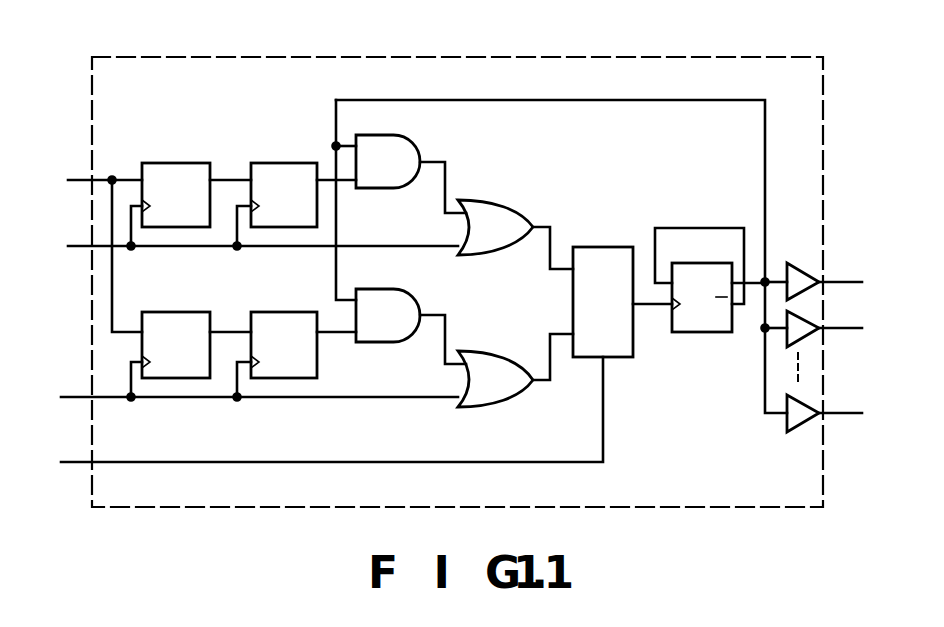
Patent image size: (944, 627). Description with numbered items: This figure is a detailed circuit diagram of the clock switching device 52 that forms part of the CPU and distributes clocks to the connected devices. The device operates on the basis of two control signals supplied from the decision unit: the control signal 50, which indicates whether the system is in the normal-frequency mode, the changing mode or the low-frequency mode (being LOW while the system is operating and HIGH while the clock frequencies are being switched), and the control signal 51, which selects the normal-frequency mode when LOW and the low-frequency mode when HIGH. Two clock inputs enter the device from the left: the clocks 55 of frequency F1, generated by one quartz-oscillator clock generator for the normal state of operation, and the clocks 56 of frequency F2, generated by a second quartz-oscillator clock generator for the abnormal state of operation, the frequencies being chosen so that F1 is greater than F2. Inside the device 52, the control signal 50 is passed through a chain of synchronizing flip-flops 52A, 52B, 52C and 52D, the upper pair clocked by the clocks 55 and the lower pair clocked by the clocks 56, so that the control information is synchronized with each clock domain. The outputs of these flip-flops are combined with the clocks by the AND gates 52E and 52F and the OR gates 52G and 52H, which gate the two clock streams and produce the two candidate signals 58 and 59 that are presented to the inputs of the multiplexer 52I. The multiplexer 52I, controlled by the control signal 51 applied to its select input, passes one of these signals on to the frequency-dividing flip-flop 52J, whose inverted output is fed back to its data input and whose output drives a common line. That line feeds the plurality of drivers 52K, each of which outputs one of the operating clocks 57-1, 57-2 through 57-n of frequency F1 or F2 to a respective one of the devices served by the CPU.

The clock switching device 52 is at (480, 57).
The synchronizing flip-flop 52A is at (178, 163).
The synchronizing flip-flop 52B is at (273, 163).
The synchronizing flip-flop 52C is at (171, 312).
The synchronizing flip-flop 52D is at (273, 312).
The AND gate 52E is at (418, 148).
The AND gate 52F is at (395, 289).
The OR gate 52G is at (505, 200).
The OR gate 52H is at (511, 349).
The multiplexer 52I is at (607, 247).
The frequency-dividing flip-flop 52J is at (690, 335).
The drivers 52K is at (793, 262).
The control signal 50 is at (74, 180).
The clocks 55 is at (74, 246).
The clocks 56 is at (78, 397).
The control signal 51 is at (78, 462).
The first multiplexer input signal 58 is at (538, 226).
The second multiplexer input signal 59 is at (534, 387).
The operating clock 57-1 is at (841, 282).
The operating clock 57-2 is at (841, 328).
The operating clock 57-n is at (841, 413).